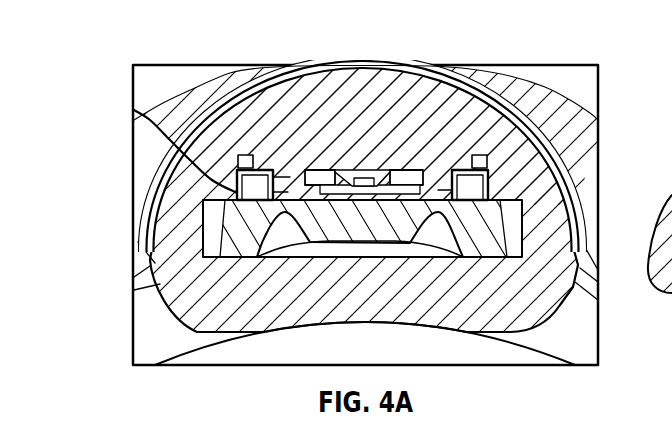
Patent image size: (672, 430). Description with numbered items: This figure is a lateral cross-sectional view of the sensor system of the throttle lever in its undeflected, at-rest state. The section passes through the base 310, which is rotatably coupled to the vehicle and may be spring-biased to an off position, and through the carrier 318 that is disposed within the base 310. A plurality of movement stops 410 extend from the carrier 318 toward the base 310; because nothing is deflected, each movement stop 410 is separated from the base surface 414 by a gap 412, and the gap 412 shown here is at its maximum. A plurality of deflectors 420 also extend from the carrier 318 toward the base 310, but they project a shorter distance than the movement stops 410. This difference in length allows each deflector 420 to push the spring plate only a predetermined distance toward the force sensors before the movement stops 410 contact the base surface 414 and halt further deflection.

The base 310 is at (490, 252).
The carrier 318 is at (435, 183).
The movement stops 410 is at (237, 176).
The gap 412 is at (134, 110).
The base surface 414 is at (306, 170).
The deflectors 420 is at (372, 170).